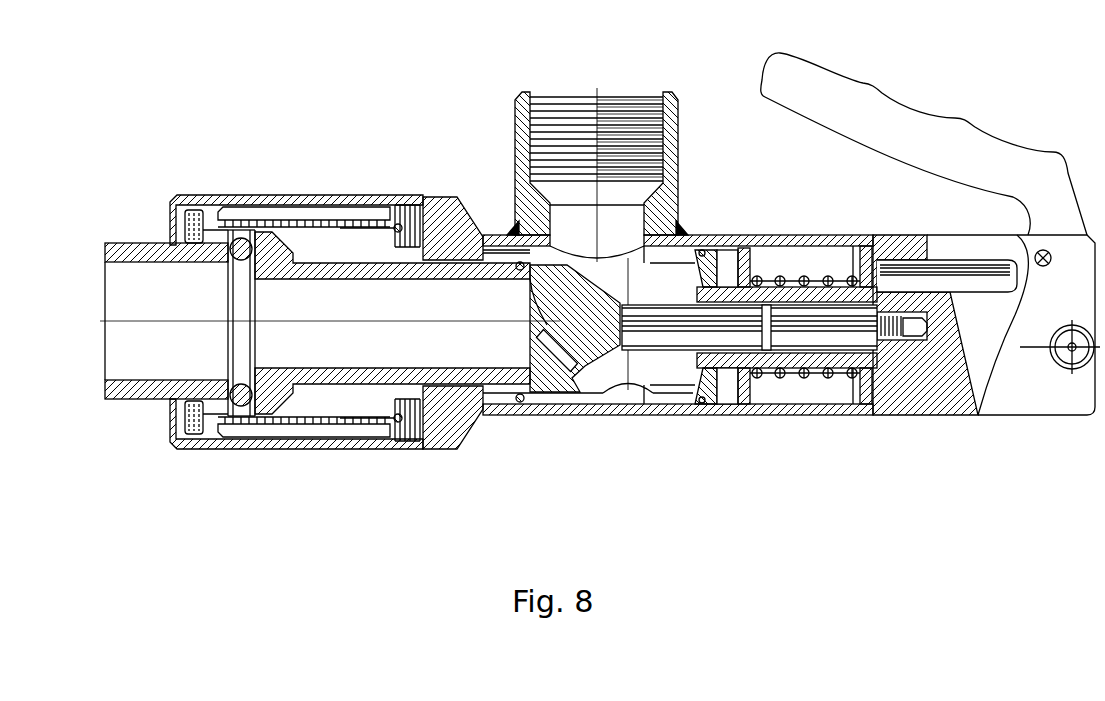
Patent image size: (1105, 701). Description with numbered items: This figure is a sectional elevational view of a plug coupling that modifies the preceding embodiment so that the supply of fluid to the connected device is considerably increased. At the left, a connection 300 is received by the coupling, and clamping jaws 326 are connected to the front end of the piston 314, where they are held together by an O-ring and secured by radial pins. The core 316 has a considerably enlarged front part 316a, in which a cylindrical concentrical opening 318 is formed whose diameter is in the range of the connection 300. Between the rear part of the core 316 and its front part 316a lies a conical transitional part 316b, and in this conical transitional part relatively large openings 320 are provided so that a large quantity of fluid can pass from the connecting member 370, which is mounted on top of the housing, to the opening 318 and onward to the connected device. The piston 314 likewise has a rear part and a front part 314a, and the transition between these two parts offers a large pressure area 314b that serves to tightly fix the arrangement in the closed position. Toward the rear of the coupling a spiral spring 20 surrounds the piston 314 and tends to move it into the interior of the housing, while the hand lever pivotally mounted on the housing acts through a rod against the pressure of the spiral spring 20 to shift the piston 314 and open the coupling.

The connection 300 is at (138, 247).
The clamping jaws 326 is at (197, 222).
The cylindrical concentrical opening 318 is at (295, 300).
The front part of the core 316a is at (322, 268).
The front part of the piston 314a is at (438, 253).
The connecting member 370 is at (633, 98).
The spiral spring 20 is at (795, 237).
The openings 320 is at (552, 355).
The conical transitional part of the core 316b is at (568, 363).
The pressure area 314b is at (690, 365).
The piston 314 is at (772, 362).
The core 316 is at (820, 337).